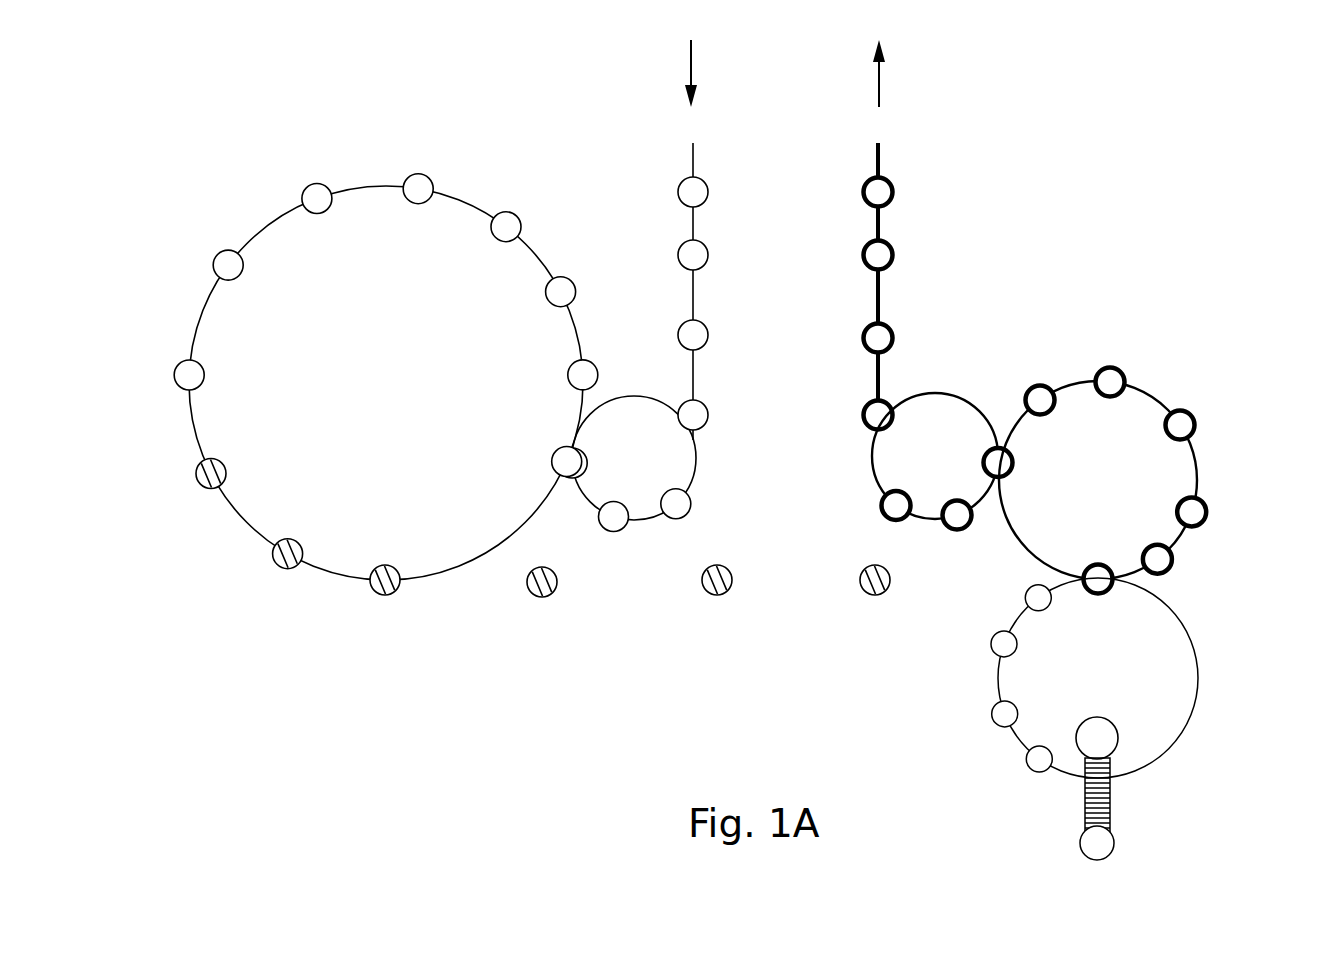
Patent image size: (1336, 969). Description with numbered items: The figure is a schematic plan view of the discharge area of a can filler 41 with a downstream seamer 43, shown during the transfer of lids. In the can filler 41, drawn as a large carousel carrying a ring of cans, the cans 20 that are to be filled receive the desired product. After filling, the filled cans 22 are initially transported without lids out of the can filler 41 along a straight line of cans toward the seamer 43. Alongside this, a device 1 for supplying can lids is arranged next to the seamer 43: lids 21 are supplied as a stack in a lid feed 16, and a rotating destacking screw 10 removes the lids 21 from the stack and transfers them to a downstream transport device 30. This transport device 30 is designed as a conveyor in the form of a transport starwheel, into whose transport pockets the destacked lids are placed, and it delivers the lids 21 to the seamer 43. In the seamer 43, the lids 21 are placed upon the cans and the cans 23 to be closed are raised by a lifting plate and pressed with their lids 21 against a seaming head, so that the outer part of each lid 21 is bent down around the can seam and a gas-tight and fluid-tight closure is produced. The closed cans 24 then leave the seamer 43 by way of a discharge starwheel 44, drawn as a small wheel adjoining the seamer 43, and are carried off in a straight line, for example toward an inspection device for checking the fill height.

The device for supplying can lids 1 is at (1167, 655).
The destacking screw 10 is at (1107, 738).
The lid feed 16 is at (1107, 798).
The cans to be filled 20 is at (697, 192).
The lids 21 is at (1092, 843).
The filled cans 22 is at (203, 473).
The cans to be closed 23 is at (1195, 510).
The closed cans 24 is at (873, 414).
The downstream transport device 30 is at (985, 679).
The can filler 41 is at (200, 322).
The seamer 43 is at (1153, 393).
The discharge starwheel 44 is at (947, 397).